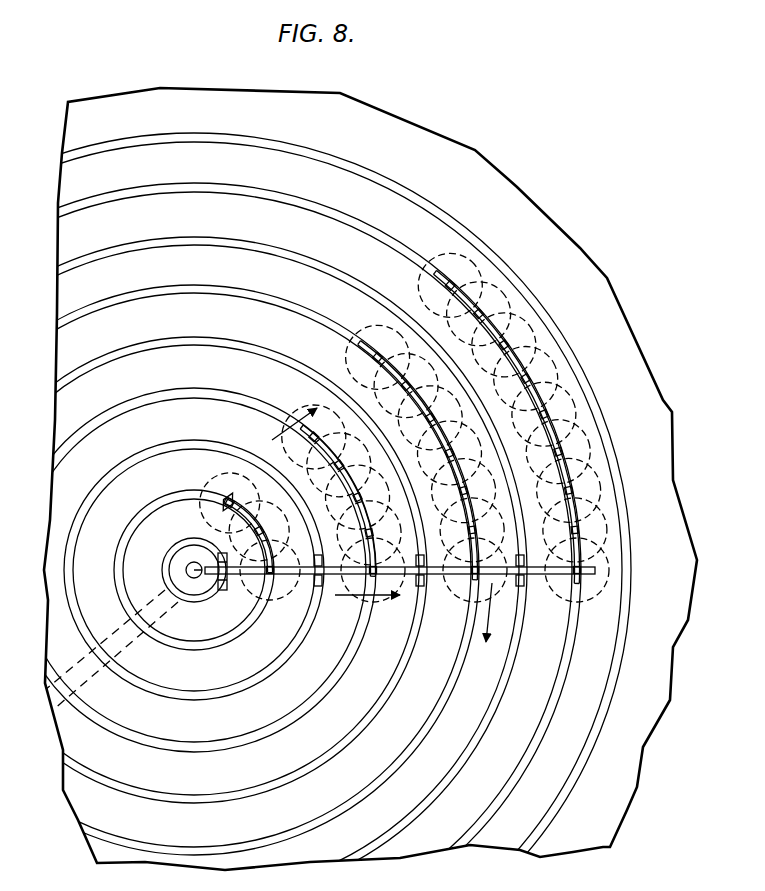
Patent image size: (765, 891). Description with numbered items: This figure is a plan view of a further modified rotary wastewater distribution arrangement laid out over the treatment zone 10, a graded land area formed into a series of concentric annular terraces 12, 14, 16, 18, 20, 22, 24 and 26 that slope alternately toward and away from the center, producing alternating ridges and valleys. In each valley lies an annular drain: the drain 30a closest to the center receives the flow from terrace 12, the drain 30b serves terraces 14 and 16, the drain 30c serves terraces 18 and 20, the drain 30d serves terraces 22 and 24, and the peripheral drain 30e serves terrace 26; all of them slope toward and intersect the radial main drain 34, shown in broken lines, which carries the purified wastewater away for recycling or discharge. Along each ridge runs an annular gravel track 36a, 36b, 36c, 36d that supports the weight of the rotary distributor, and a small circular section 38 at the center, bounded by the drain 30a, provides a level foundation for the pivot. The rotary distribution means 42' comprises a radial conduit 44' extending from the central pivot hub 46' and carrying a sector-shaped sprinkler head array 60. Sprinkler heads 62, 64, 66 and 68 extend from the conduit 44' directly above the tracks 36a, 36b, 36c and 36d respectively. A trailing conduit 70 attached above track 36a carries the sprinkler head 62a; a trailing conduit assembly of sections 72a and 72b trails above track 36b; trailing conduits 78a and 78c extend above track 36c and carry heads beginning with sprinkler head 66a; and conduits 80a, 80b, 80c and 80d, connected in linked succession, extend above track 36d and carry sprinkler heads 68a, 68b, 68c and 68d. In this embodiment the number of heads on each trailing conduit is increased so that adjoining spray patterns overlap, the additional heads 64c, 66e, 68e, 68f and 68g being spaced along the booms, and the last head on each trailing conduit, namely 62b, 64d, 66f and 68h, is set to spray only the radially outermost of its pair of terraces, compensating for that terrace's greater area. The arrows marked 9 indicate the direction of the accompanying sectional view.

The treatment zone 10 is at (413, 188).
The terrace 12 is at (188, 630).
The terrace 14 is at (248, 665).
The terrace 16 is at (298, 691).
The terrace 18 is at (348, 715).
The terrace 20 is at (396, 745).
The terrace 22 is at (445, 765).
The terrace 24 is at (495, 780).
The terrace 26 is at (553, 790).
The drain 30a is at (175, 547).
The drain 30b is at (112, 470).
The drain 30c is at (112, 356).
The drain 30d is at (106, 256).
The drain 30e is at (113, 147).
The main drain 34 is at (95, 690).
The track 36a is at (148, 509).
The track 36b is at (170, 396).
The track 36c is at (186, 298).
The track 36d is at (208, 190).
The circular section 38 is at (180, 577).
The rotary distribution means 42' is at (227, 584).
The radial conduit 44' is at (400, 594).
The central pivot hub 46' is at (163, 565).
The sprinkler head array 60 is at (560, 358).
The sprinkler head 62 is at (243, 542).
The sprinkler head 62a is at (228, 502).
The sprinkler head 62b is at (212, 485).
The sprinkler head 64 is at (338, 493).
The pivot 64c is at (350, 420).
The sprinkler head 64d is at (314, 416).
The sprinkler head 66 is at (420, 459).
The sprinkler head 66a is at (466, 578).
The pivot 66e is at (423, 344).
The sprinkler head 66f is at (377, 350).
The sprinkler head 68 is at (539, 427).
The sprinkler head 68a is at (602, 530).
The sprinkler head 68b is at (612, 483).
The sprinkler head 68c is at (580, 447).
The sprinkler head 68d is at (587, 397).
The pivot 68e is at (536, 364).
The pivot 68f is at (517, 336).
The pivot 68g is at (513, 284).
The sprinkler head 68h is at (450, 277).
The trailing conduit 70 is at (259, 531).
The trailing conduit section 72a is at (347, 533).
The trailing conduit section 72b is at (327, 464).
The trailing conduit 78a is at (501, 612).
The trailing conduit 78c is at (406, 354).
The conduit 80a is at (609, 570).
The conduit 80b is at (592, 482).
The conduit 80c is at (564, 404).
The conduit 80d is at (479, 290).
The section line 9 is at (327, 515).